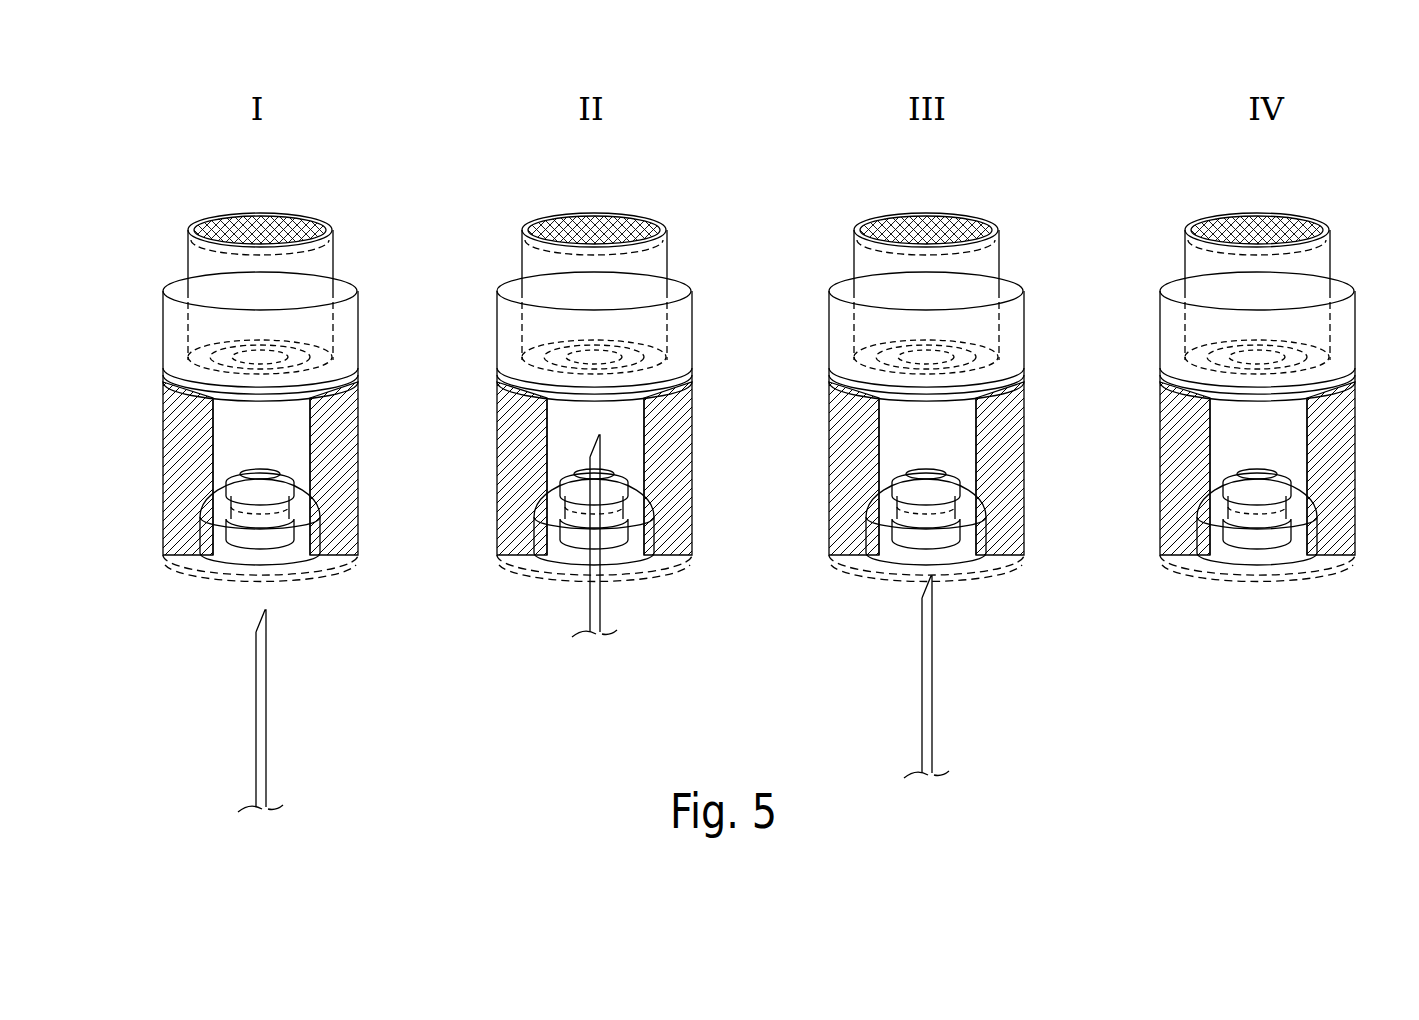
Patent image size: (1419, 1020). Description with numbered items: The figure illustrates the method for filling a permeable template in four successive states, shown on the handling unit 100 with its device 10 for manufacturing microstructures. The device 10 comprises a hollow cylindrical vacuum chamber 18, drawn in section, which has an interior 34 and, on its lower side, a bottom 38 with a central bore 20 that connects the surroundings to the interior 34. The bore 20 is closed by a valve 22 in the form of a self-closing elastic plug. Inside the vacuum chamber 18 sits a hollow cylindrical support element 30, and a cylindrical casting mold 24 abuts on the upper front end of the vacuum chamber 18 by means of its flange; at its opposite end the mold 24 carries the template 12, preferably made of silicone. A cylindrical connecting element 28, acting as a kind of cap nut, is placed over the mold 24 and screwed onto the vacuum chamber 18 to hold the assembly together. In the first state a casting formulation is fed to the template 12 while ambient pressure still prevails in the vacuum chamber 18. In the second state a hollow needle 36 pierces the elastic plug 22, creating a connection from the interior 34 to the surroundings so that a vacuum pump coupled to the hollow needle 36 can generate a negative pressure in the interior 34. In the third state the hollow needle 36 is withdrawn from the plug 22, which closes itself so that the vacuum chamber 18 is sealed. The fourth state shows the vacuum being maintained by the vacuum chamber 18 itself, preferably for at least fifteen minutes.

The handling unit 100 is at (742, 480).
The device for manufacturing microstructures 10 is at (735, 267).
The template 12 is at (785, 196).
The vacuum chamber 18 is at (717, 471).
The bore 20 is at (730, 554).
The valve 22 is at (818, 534).
The mold 24 is at (701, 293).
The connecting element 28 is at (715, 329).
The support element 30 is at (794, 238).
The interior 34 is at (804, 470).
The hollow needle 36 is at (593, 623).
The bottom 38 is at (772, 595).